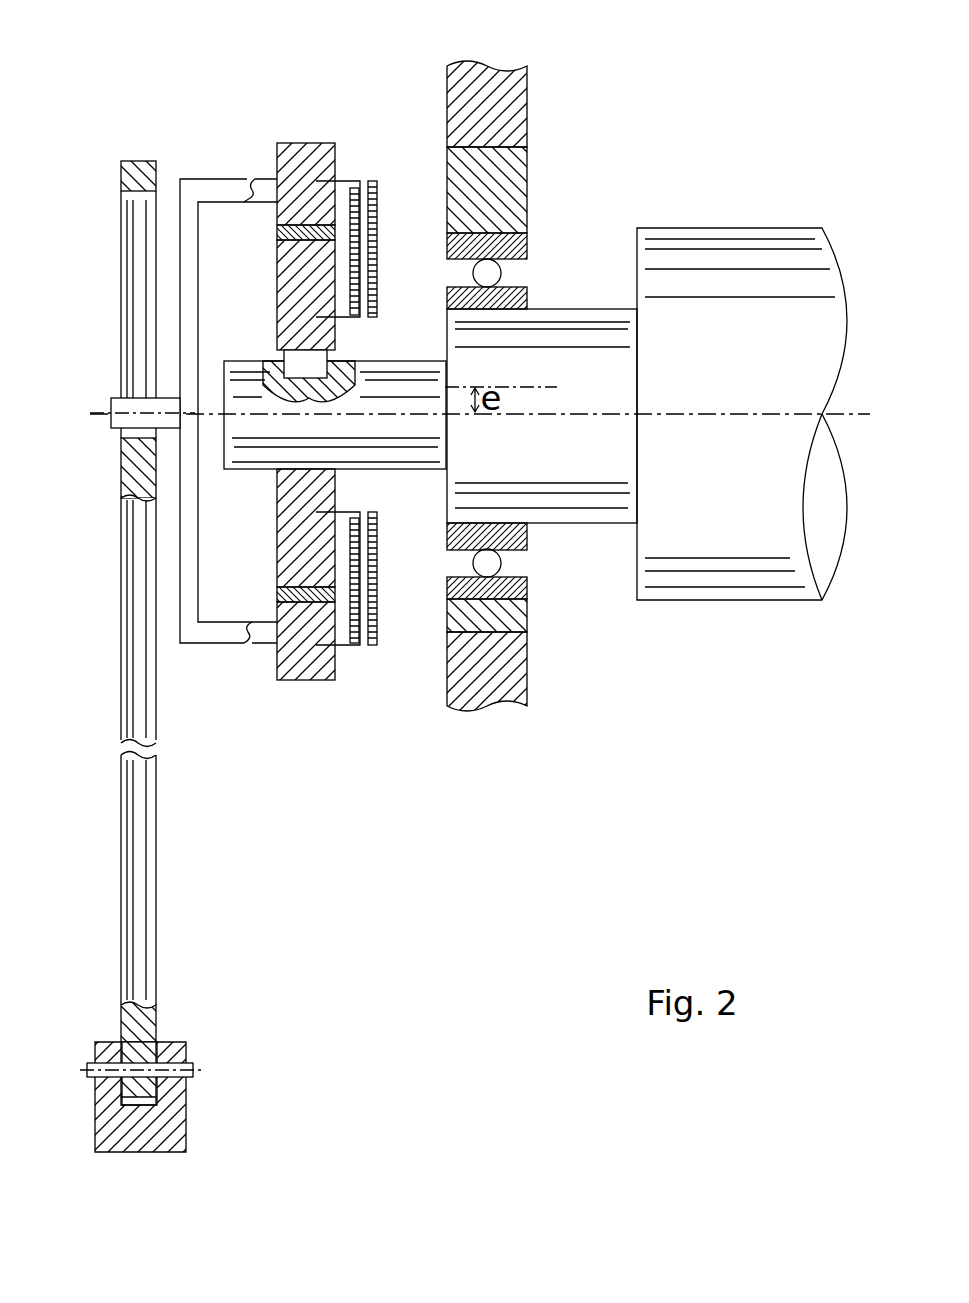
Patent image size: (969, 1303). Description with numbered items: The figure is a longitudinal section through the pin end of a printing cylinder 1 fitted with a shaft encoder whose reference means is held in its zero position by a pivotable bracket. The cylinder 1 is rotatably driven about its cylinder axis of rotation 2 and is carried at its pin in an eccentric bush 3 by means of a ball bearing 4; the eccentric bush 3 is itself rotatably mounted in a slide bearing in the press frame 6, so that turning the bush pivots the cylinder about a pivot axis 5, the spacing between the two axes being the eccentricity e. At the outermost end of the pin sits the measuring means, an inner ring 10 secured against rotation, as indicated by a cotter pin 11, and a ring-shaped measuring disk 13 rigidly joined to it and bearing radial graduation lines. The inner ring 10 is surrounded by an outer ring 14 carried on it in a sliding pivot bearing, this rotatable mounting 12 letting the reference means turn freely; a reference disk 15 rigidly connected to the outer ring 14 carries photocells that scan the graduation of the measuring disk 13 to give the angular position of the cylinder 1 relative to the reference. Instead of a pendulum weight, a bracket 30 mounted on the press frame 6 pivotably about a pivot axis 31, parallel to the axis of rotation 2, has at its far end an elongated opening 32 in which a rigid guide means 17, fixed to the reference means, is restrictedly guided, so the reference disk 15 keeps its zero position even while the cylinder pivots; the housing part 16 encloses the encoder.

The printing cylinder 1 is at (748, 228).
The cylinder axis of rotation 2 is at (715, 414).
The eccentric bush 3 is at (508, 182).
The ball bearing 4 is at (512, 249).
The pivot axis 5 is at (557, 387).
The press frame 6 is at (500, 77).
The inner ring 10 is at (298, 293).
The cotter pin 11 is at (300, 363).
The rotatable mounting 12 is at (280, 597).
The measuring disk 13 is at (348, 203).
The outer ring 14 is at (303, 147).
The reference disk 15 is at (377, 197).
The housing frame 16 is at (215, 187).
The rigid guide means 17 is at (110, 407).
The bracket 30 is at (149, 919).
The pivot axis 31 is at (197, 1065).
The elongated opening 32 is at (137, 210).